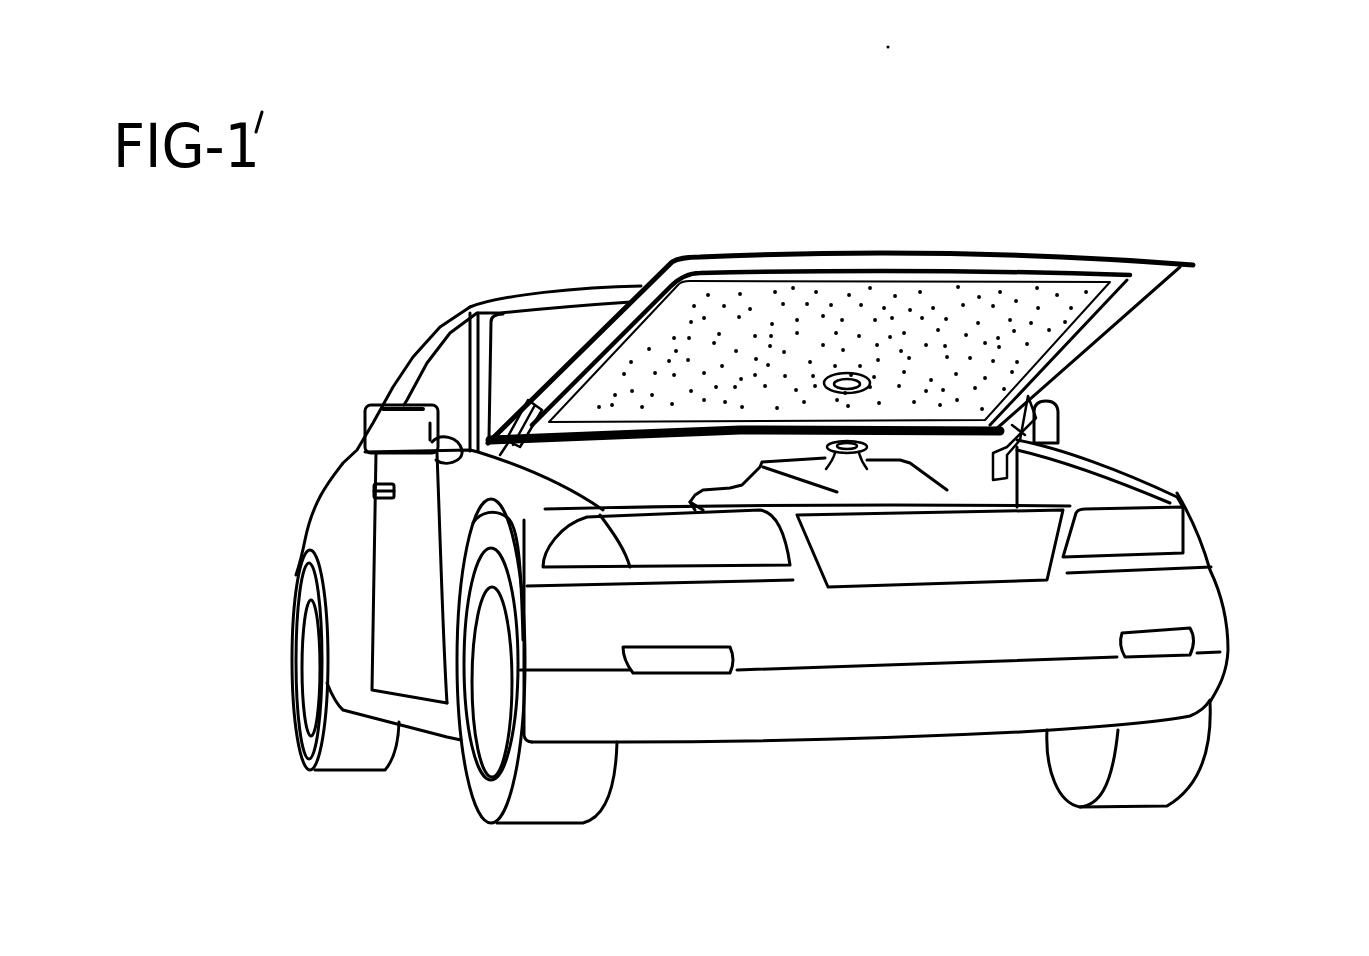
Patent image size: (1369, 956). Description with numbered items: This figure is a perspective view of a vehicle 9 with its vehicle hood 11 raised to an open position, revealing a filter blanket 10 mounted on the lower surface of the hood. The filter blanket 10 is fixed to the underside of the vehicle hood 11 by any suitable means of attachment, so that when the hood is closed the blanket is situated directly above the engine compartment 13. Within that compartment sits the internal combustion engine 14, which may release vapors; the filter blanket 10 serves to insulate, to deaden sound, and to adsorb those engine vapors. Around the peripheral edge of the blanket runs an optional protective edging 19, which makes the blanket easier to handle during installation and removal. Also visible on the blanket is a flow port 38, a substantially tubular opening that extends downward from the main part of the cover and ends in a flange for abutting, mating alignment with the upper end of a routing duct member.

The vehicle 9 is at (295, 413).
The filter blanket 10 is at (1033, 347).
The vehicle hood 11 is at (1155, 262).
The engine compartment 13 is at (1075, 477).
The internal combustion engine 14 is at (693, 485).
The protective edging 19 is at (1102, 307).
The flow port 38 is at (827, 375).